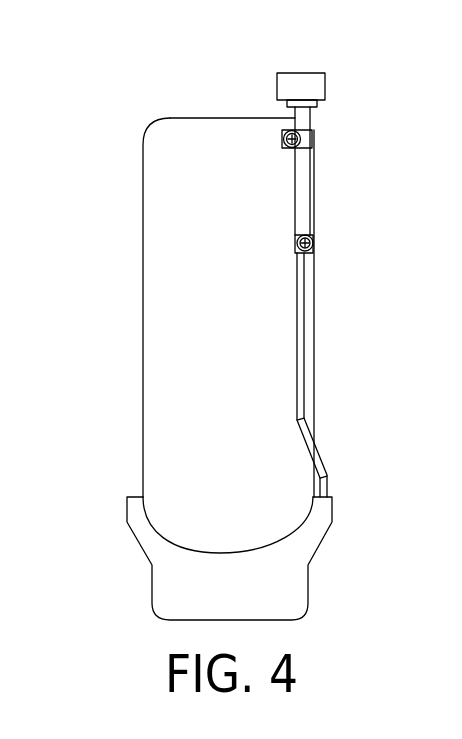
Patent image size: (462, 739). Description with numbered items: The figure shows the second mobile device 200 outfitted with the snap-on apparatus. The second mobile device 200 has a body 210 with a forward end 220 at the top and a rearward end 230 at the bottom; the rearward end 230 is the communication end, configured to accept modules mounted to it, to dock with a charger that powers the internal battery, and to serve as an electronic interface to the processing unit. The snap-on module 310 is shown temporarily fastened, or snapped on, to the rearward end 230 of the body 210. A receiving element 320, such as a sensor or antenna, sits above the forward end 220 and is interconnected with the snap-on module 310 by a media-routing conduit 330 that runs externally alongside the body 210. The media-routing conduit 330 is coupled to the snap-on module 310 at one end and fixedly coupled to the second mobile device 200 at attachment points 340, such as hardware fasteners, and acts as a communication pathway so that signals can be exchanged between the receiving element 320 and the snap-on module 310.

The second mobile device 200 is at (86, 171).
The body 210 is at (143, 316).
The forward end 220 is at (220, 108).
The rearward end 230 is at (132, 478).
The snap-on module 310 is at (319, 588).
The receiving elements 320 is at (270, 76).
The media-routing conduits 330 is at (310, 326).
The attachment points 340 is at (302, 139).